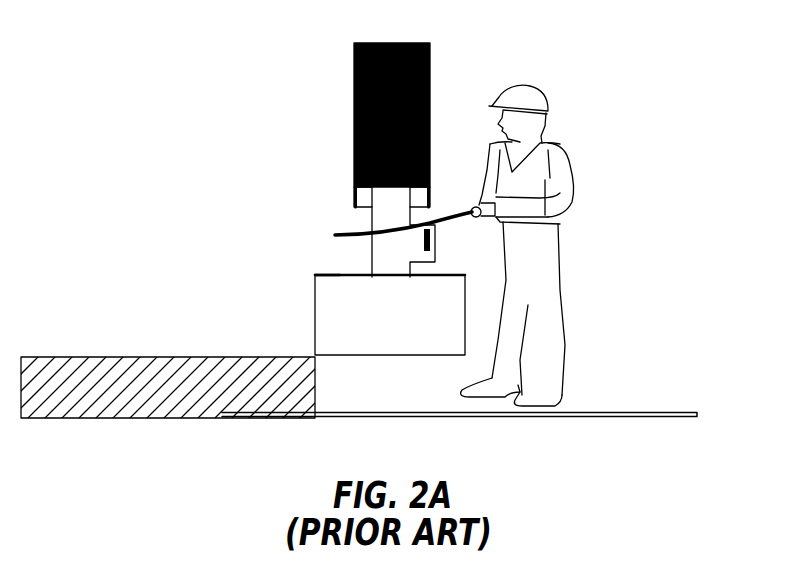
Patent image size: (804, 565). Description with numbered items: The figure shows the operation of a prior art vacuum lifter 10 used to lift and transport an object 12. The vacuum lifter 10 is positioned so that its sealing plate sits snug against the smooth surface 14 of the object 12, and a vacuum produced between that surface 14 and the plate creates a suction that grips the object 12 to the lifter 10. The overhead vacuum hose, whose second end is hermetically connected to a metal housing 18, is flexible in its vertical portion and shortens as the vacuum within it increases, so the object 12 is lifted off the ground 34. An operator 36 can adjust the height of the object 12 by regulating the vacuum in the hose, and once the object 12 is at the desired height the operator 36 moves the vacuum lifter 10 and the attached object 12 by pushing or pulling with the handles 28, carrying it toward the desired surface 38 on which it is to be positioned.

The vacuum lifter 10 is at (292, 127).
The object 12 is at (405, 329).
The smooth surface 14 is at (335, 275).
The metal housing 18 is at (372, 258).
The handles 28 is at (350, 233).
The ground 34 is at (647, 413).
The operator 36 is at (566, 193).
The desired surface 38 is at (188, 357).